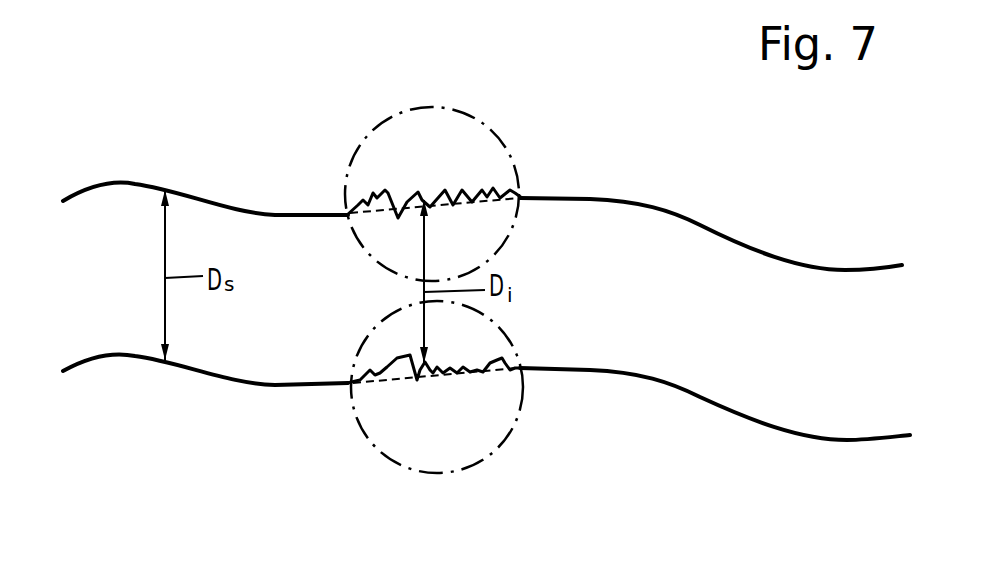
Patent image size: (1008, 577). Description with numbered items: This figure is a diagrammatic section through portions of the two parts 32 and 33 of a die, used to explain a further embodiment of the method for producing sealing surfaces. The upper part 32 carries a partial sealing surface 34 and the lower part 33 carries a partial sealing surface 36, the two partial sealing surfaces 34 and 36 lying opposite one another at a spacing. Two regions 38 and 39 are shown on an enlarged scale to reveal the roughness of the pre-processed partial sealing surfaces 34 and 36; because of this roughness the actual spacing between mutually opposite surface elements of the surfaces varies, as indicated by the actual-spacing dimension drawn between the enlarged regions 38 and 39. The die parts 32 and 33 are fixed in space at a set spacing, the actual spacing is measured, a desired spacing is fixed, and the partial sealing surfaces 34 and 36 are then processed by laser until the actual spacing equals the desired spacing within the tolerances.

The die part 32 is at (686, 149).
The die part 33 is at (686, 465).
The partial sealing surface 34 is at (278, 212).
The partial sealing surface 36 is at (280, 388).
The region 38 is at (412, 107).
The region 39 is at (419, 473).